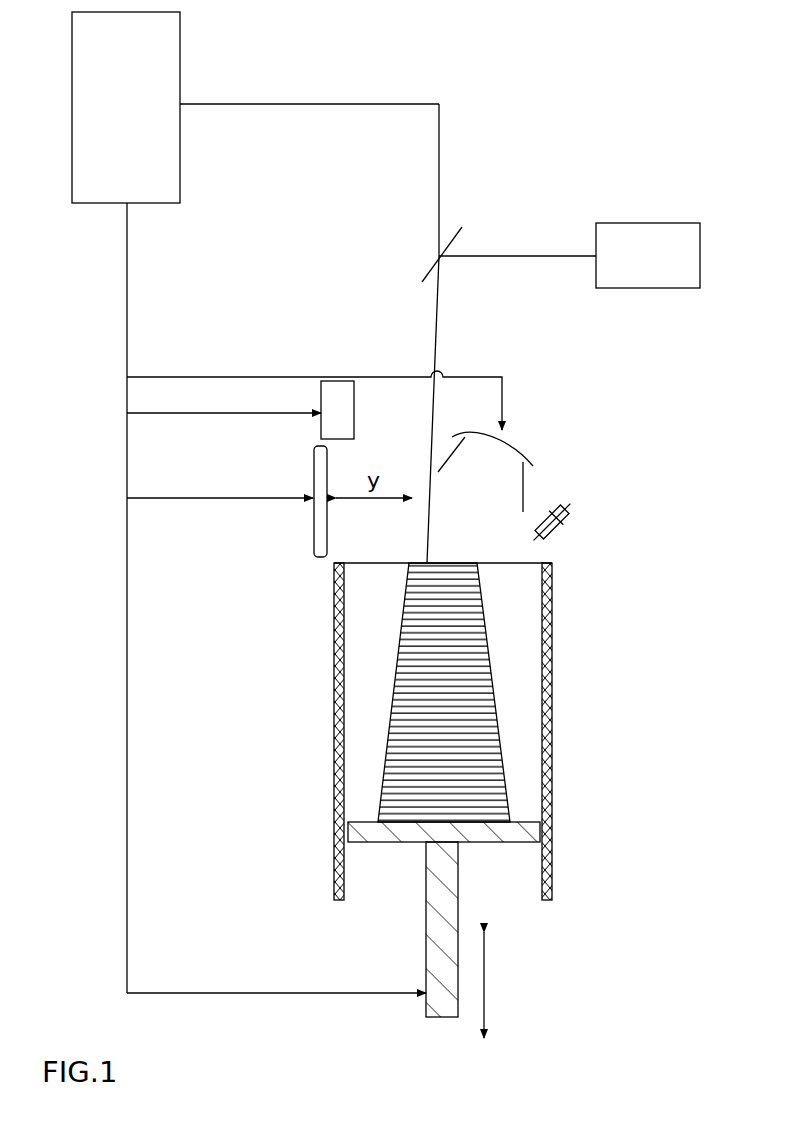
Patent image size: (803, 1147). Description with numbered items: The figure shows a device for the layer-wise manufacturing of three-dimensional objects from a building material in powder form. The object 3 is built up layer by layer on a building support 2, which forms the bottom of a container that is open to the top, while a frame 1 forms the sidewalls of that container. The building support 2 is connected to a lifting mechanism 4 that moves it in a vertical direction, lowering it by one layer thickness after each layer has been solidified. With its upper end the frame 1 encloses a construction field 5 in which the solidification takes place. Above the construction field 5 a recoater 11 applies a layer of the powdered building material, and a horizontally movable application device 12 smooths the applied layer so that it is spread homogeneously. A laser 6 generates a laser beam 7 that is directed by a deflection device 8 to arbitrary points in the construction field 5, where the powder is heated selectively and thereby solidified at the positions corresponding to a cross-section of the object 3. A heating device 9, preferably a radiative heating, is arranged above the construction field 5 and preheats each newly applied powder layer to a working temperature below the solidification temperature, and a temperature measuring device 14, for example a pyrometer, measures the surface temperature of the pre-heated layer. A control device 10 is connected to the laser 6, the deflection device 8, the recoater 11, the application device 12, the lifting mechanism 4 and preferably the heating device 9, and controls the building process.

The frame 1 is at (553, 670).
The building support 2 is at (520, 822).
The object 3 is at (382, 702).
The lifting mechanism 4 is at (486, 978).
The construction field 5 is at (514, 562).
The laser 6 is at (650, 223).
The laser beam 7 is at (553, 257).
The deflection device 8 is at (425, 272).
The heating device 9 is at (503, 440).
The control device 10 is at (165, 86).
The recoater 11 is at (357, 414).
The application device 12 is at (313, 474).
The temperature measuring device 14 is at (572, 520).